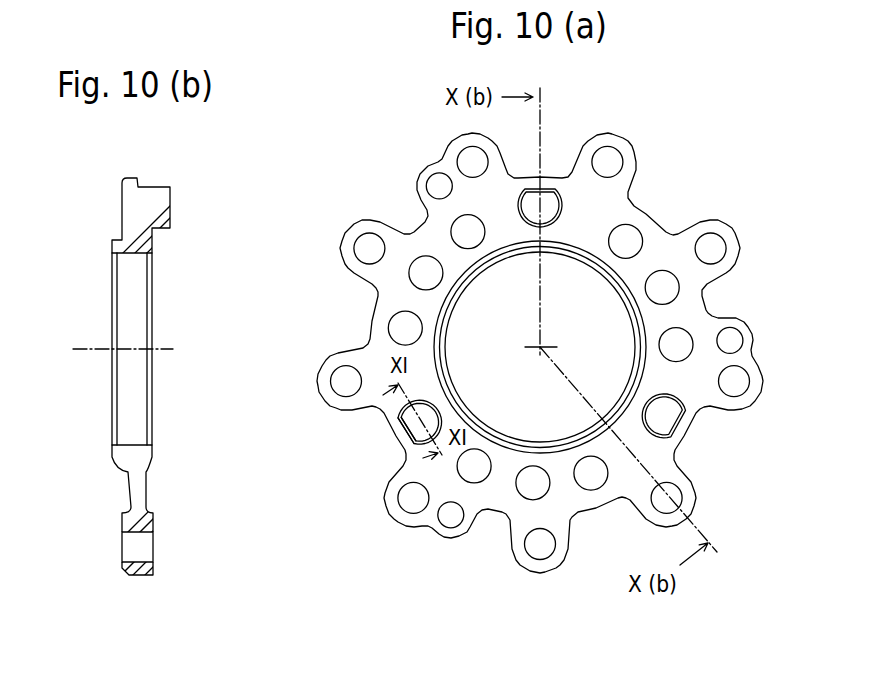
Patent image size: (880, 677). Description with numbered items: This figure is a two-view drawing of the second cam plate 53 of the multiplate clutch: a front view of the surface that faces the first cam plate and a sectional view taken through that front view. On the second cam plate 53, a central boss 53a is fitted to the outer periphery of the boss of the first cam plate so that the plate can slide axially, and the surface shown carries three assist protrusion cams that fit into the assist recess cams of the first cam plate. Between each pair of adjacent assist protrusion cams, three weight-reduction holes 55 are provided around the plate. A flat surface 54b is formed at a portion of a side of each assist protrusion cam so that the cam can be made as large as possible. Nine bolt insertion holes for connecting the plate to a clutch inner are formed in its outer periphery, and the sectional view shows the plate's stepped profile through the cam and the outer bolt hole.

The second cam plate 53 is at (667, 128).
The boss 53a is at (468, 268).
The flat surface 54b is at (397, 430).
The weight-reduction hole 55 is at (626, 242).